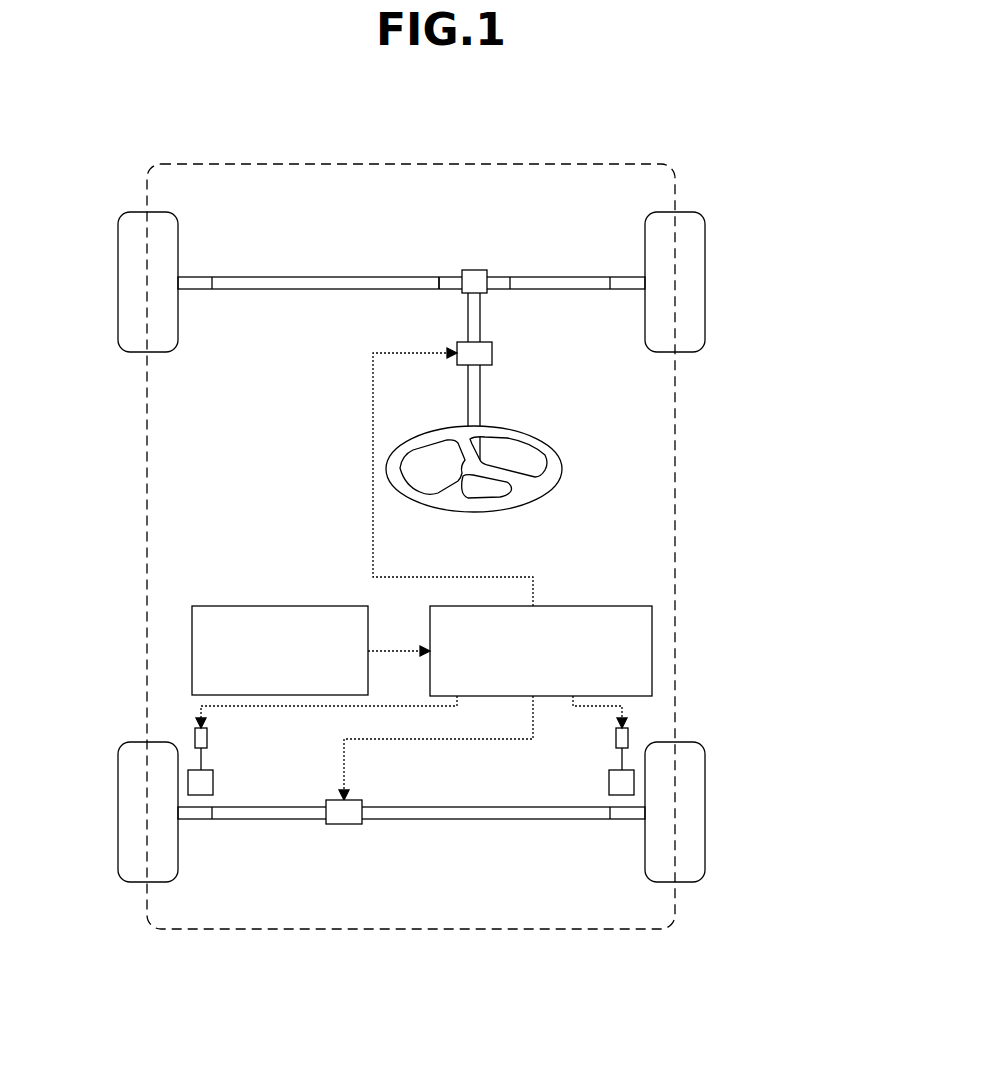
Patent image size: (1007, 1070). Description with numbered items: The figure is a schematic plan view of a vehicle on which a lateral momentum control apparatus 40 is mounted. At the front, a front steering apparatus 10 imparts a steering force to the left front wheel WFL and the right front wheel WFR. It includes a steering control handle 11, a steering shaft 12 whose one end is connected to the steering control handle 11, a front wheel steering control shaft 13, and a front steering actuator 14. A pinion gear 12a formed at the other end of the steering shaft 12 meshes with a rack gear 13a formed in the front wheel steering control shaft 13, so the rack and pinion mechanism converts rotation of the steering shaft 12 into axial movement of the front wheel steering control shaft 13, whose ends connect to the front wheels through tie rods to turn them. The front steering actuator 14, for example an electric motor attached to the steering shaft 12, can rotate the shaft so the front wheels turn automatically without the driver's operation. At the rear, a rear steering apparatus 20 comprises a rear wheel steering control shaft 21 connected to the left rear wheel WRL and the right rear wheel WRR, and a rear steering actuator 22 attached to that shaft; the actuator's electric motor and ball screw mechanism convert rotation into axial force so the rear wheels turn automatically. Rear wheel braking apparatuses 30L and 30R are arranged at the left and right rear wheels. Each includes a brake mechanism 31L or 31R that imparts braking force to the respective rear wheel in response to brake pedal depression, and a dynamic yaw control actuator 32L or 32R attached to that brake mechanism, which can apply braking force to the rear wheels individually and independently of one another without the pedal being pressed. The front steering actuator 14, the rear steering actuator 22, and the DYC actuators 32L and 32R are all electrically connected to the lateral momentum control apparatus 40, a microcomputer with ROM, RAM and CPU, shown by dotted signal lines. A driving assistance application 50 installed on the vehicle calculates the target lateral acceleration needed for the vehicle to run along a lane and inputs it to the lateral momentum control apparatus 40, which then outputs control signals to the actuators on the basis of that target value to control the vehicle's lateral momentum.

The front steering apparatus 10 is at (352, 254).
The steering control handle 11 is at (562, 468).
The steering shaft 12 is at (482, 388).
The pinion gear 12a is at (474, 268).
The front wheel steering control shaft 13 is at (573, 276).
The rack gear 13a is at (447, 276).
The front steering actuator 14 is at (492, 353).
The rear steering apparatus 20 is at (426, 841).
The rear wheel steering control shaft 21 is at (545, 820).
The rear steering actuator 22 is at (343, 826).
The rear wheel braking apparatus 30L is at (256, 761).
The brake mechanism 31L is at (213, 782).
The DYC actuator 32L is at (207, 738).
The rear wheel braking apparatus 30R is at (578, 761).
The brake mechanism 31R is at (609, 782).
The DYC actuator 32R is at (616, 738).
The lateral momentum control apparatus 40 is at (652, 651).
The driving assistance application 50 is at (293, 605).
The left front wheel WFL is at (116, 283).
The right front wheel WFR is at (705, 283).
The left rear wheel WRL is at (116, 812).
The right rear wheel WRR is at (705, 812).